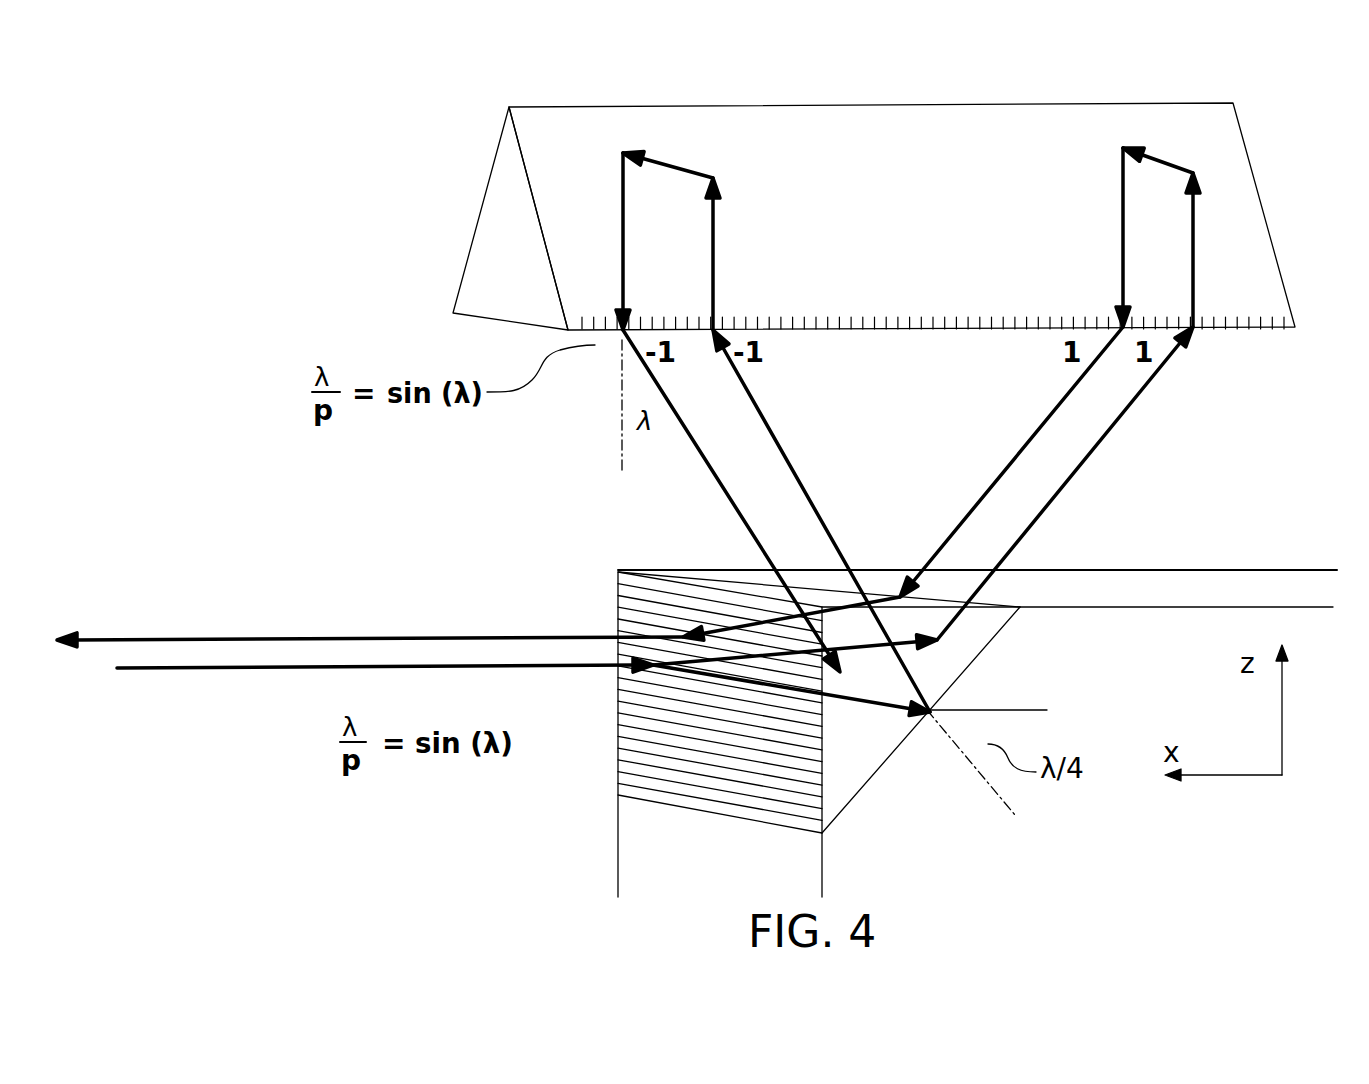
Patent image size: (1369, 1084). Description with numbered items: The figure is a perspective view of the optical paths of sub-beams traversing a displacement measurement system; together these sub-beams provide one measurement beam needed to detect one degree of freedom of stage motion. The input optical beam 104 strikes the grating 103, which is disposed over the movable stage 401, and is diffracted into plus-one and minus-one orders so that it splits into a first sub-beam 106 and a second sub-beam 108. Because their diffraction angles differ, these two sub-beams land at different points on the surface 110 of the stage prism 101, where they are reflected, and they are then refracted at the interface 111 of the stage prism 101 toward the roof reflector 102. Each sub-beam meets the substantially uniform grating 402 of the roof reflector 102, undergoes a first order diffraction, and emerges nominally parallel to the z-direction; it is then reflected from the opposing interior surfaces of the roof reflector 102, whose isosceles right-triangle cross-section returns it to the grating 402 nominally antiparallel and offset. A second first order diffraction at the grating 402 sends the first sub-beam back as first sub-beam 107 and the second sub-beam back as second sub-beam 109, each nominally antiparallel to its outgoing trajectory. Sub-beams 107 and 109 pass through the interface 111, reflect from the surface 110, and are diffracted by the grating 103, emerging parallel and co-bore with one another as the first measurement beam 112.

The stage prism 101 is at (557, 605).
The roof reflector 102 is at (537, 105).
The grating 103 is at (625, 757).
The input optical beam 104 is at (185, 672).
The first sub-beam 106 is at (1108, 435).
The first sub-beam 107 is at (1007, 467).
The second sub-beam 108 is at (783, 443).
The second sub-beam 109 is at (738, 512).
The surface 110 is at (988, 652).
The interface 111 is at (660, 570).
The first measurement beam 112 is at (182, 638).
The stage 401 is at (1280, 568).
The grating 402 is at (1250, 303).